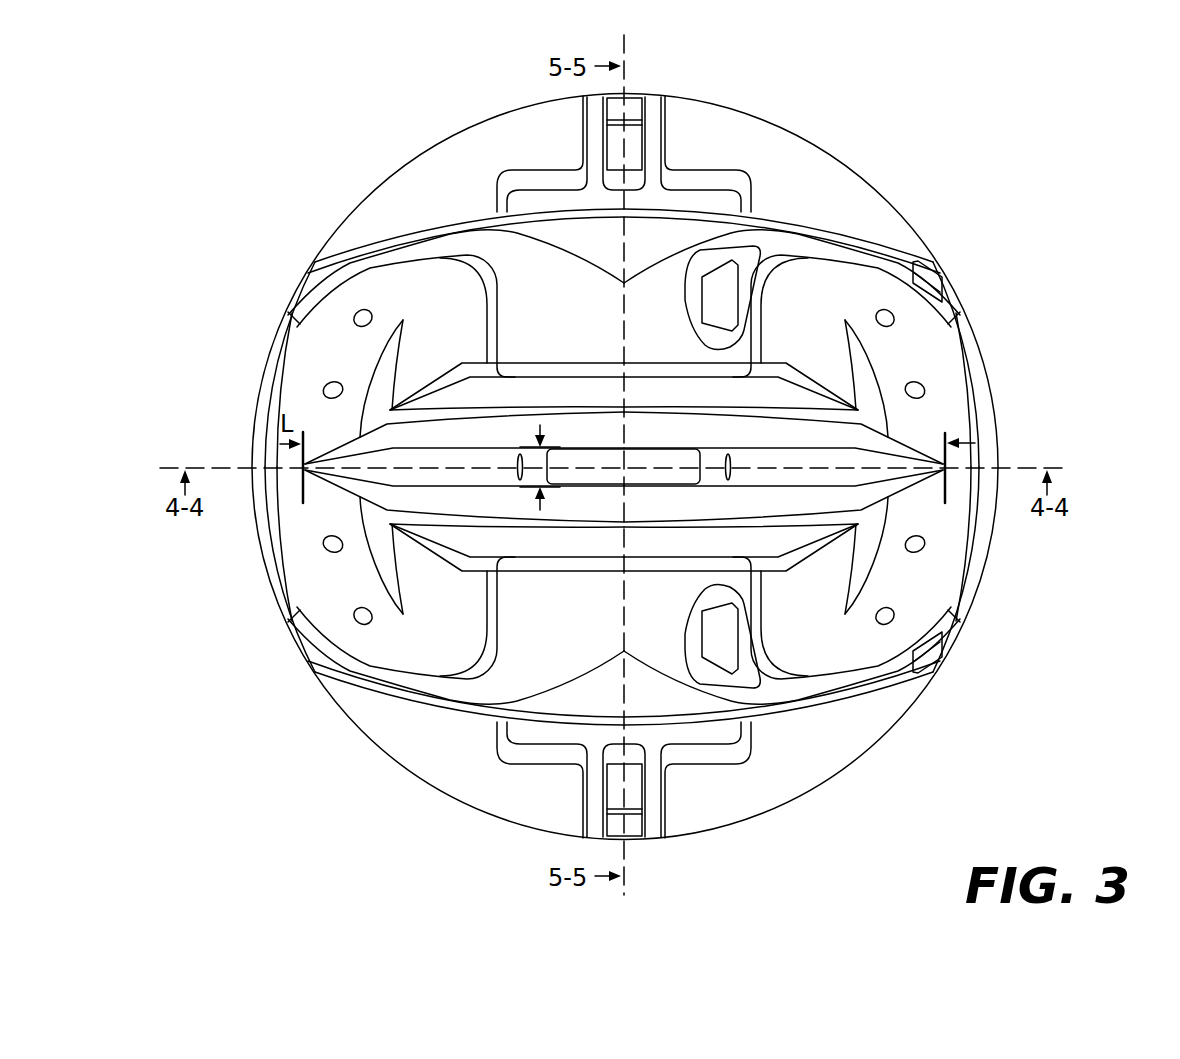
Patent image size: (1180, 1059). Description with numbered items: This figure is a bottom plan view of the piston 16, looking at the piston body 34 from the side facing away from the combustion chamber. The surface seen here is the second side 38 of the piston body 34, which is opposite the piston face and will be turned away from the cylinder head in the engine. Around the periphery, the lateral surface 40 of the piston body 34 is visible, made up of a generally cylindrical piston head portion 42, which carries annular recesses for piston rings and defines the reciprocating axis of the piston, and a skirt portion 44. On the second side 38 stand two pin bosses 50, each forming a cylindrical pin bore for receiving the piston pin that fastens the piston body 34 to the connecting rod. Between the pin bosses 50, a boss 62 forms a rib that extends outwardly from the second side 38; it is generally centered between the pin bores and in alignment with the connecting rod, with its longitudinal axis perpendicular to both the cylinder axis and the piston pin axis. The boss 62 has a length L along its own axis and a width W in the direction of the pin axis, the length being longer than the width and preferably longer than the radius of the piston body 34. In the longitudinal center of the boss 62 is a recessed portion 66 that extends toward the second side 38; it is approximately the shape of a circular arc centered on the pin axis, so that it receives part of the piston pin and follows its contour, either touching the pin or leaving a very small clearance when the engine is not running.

The piston 16 is at (1103, 123).
The piston body 34 is at (1050, 450).
The second side 38 is at (300, 362).
The lateral surface 40 is at (767, 122).
The piston head portion 42 is at (863, 180).
The skirt portion 44 is at (873, 242).
The pin boss 50 is at (520, 308).
The boss 62 is at (450, 488).
The recessed portion 66 is at (657, 458).